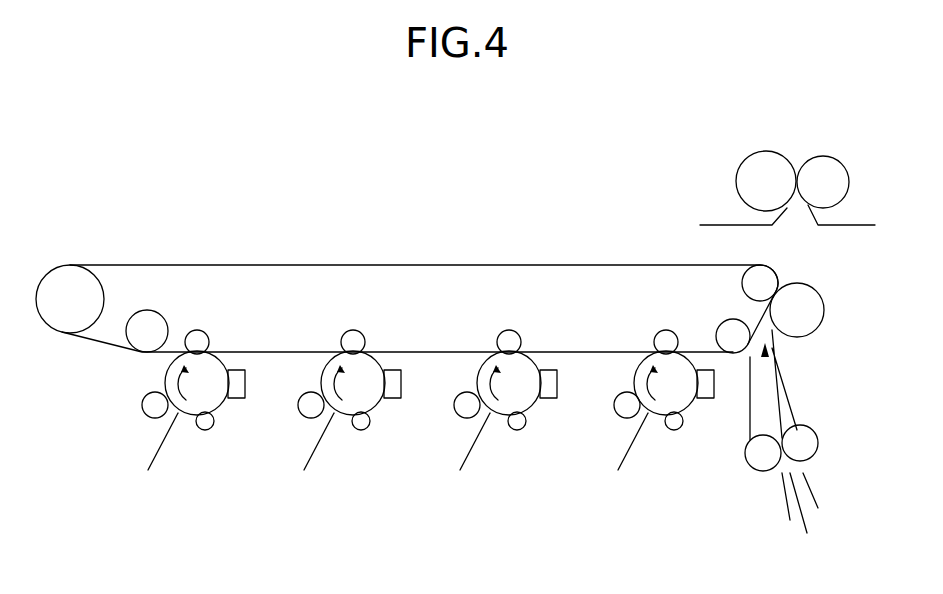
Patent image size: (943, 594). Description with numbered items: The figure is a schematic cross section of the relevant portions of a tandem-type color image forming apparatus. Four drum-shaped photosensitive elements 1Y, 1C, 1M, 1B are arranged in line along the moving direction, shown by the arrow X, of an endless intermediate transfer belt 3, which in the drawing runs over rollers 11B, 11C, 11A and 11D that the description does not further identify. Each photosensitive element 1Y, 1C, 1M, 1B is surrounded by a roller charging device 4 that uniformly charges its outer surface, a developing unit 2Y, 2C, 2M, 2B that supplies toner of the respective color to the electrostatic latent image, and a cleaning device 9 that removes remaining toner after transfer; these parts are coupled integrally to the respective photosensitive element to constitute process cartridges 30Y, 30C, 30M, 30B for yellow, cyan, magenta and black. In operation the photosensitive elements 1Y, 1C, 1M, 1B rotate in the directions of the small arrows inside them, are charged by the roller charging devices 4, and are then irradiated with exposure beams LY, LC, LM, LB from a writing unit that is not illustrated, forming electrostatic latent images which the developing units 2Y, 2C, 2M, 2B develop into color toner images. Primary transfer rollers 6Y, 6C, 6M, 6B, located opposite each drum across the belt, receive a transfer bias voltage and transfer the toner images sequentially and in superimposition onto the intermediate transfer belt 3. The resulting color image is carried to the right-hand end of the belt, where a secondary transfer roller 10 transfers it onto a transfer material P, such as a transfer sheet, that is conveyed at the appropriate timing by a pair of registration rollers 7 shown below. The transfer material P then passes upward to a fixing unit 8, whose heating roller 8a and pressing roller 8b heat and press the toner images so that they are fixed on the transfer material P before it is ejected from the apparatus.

The intermediate transfer belt 3 is at (245, 264).
The driven roller 11B is at (59, 278).
The tension roller 11C is at (144, 310).
The drive roller 11A is at (776, 272).
The support roller 11D is at (727, 320).
The secondary transfer roller 10 is at (824, 305).
The photosensitive element 1Y is at (197, 383).
The photosensitive element 1C is at (353, 383).
The photosensitive element 1M is at (509, 383).
The photosensitive element 1B is at (666, 383).
The primary transfer roller 6Y is at (197, 329).
The primary transfer roller 6C is at (353, 329).
The primary transfer roller 6M is at (509, 329).
The primary transfer roller 6B is at (666, 329).
The developing unit 2Y is at (149, 393).
The developing unit 2C is at (304, 393).
The developing unit 2M is at (460, 393).
The developing unit 2B is at (619, 393).
The exposure beam LY is at (156, 453).
The exposure beam LC is at (314, 453).
The exposure beam LM is at (469, 453).
The exposure beam LB is at (628, 453).
The process cartridge 30Y is at (187, 447).
The process cartridge 30C is at (343, 447).
The process cartridge 30M is at (499, 447).
The process cartridge 30B is at (657, 447).
The roller charging device 4 is at (212, 431).
The cleaning device 9 is at (245, 395).
The moving direction of the intermediate transfer belt X is at (619, 340).
The transfer material P is at (788, 384).
The pair of registration rollers 7 is at (807, 468).
The fixing unit 8 is at (765, 174).
The heating roller 8a is at (751, 156).
The pressing roller 8b is at (837, 160).